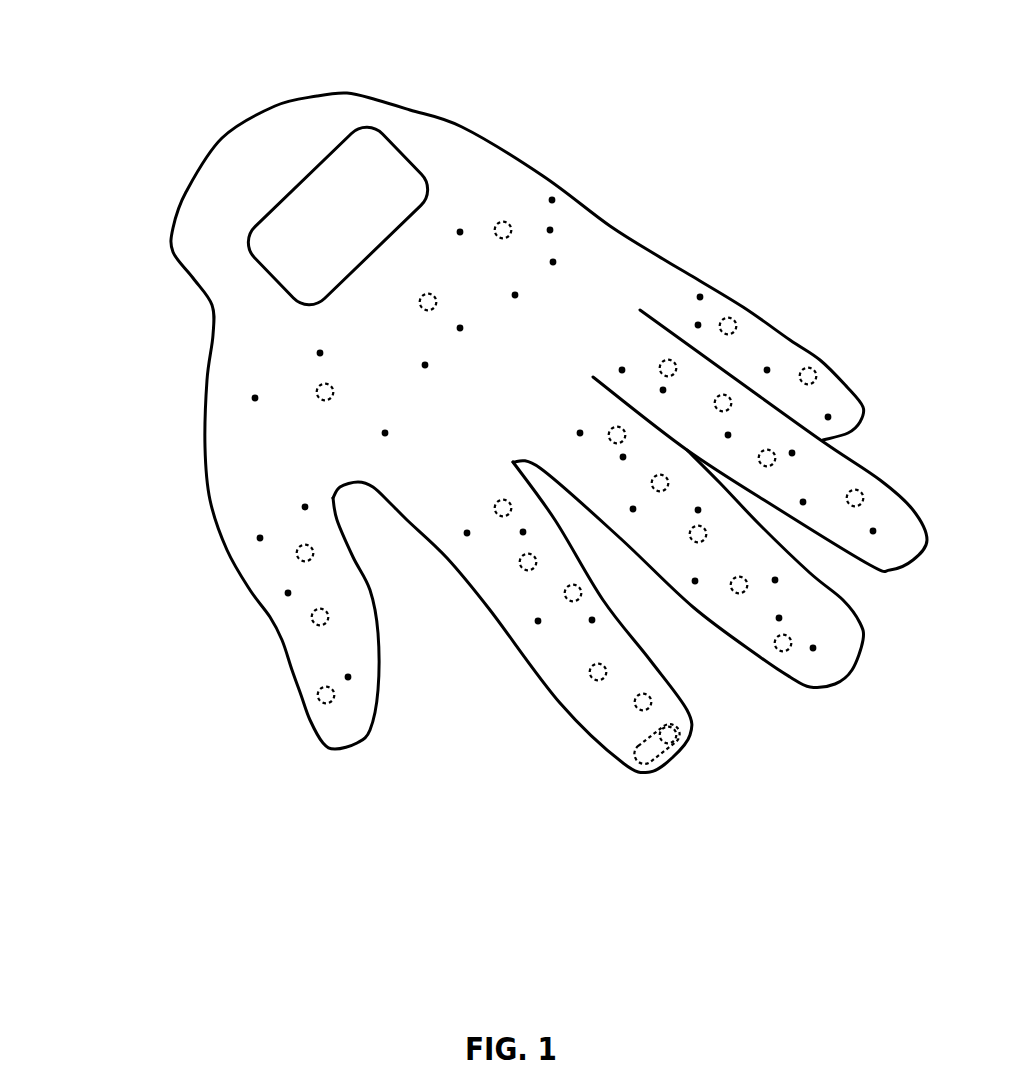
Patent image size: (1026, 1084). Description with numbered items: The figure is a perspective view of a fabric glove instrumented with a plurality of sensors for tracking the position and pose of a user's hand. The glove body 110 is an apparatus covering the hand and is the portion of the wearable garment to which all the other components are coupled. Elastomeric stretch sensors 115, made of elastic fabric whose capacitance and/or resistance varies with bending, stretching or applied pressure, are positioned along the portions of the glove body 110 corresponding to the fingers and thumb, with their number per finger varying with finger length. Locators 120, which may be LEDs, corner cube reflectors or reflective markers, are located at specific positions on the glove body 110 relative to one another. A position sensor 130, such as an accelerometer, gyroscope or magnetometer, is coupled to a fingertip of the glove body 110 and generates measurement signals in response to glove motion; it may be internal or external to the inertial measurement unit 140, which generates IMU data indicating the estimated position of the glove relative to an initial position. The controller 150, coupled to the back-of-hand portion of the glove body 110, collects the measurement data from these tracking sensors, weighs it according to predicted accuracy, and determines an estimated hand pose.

The glove body 110 is at (212, 320).
The elastomeric stretch sensors 115 is at (326, 695).
The locators 120 is at (700, 295).
The position sensor 130 is at (677, 733).
The inertial measurement unit 140 is at (660, 770).
The controller 150 is at (338, 218).